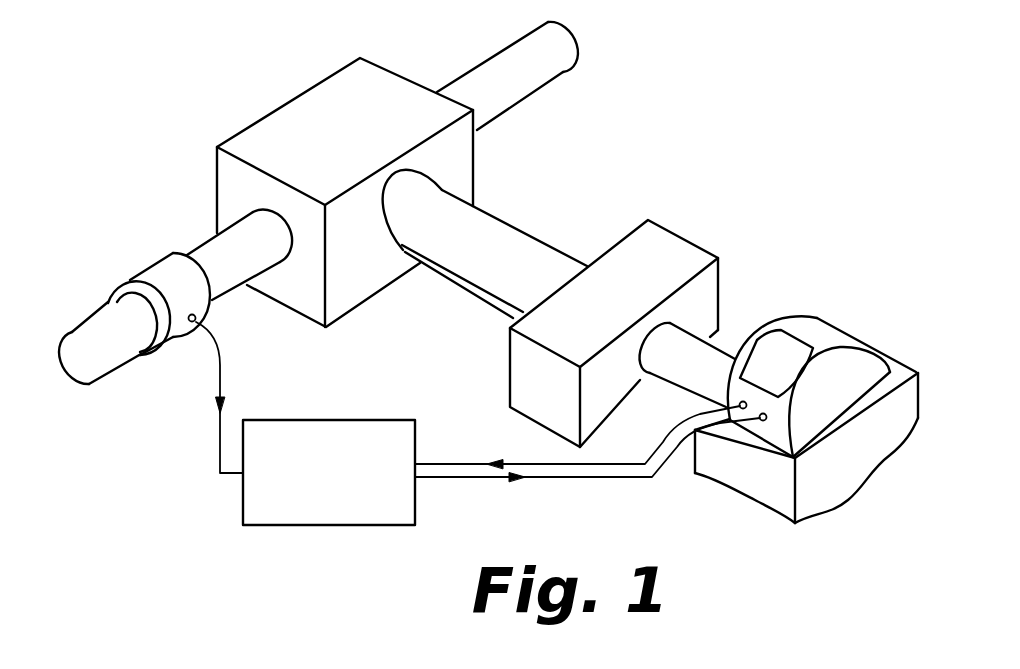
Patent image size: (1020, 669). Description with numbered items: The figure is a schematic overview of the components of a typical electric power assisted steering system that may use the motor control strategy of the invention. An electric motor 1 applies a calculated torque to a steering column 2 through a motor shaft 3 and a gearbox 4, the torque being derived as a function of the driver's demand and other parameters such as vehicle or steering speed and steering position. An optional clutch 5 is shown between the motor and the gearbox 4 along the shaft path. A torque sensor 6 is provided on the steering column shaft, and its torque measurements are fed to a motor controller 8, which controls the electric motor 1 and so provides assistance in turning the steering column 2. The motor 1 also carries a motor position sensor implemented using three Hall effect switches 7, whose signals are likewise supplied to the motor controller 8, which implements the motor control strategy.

The electric motor 1 is at (850, 372).
The steering column 2 is at (95, 335).
The motor shaft 3 is at (495, 238).
The gearbox 4 is at (287, 118).
The clutch 5 is at (673, 245).
The torque sensor 6 is at (180, 328).
The Hall effect switches 7 is at (785, 340).
The motor controller 8 is at (377, 432).